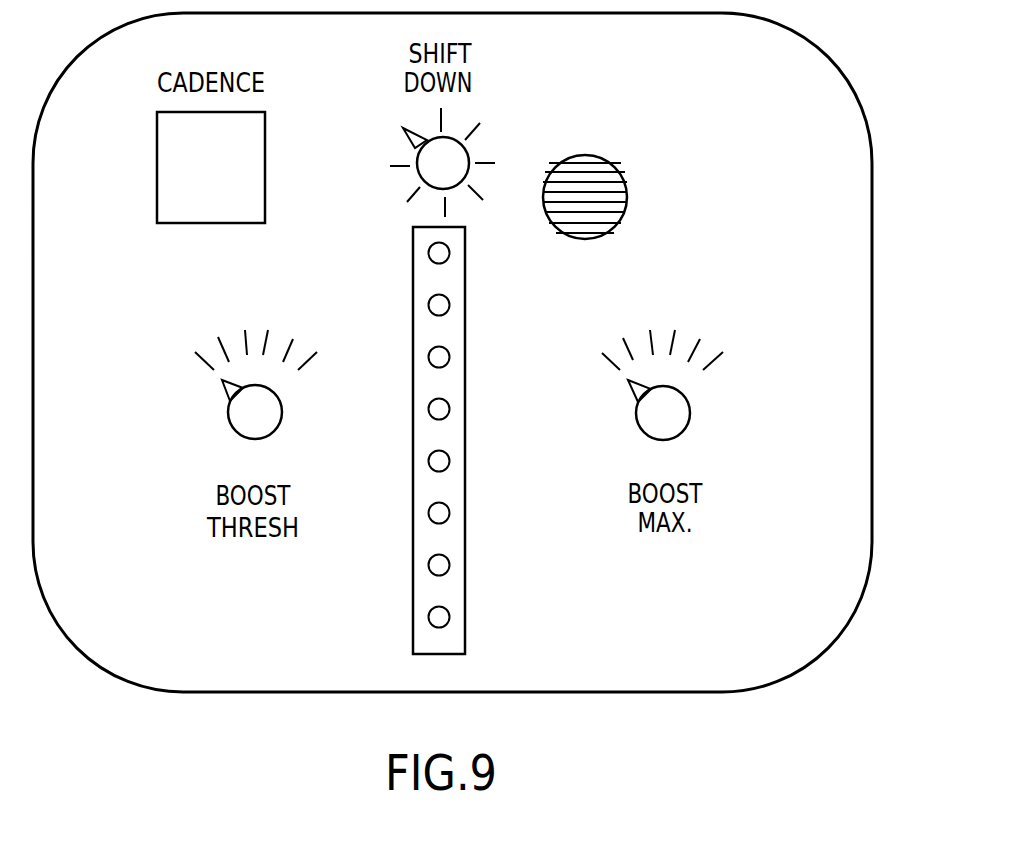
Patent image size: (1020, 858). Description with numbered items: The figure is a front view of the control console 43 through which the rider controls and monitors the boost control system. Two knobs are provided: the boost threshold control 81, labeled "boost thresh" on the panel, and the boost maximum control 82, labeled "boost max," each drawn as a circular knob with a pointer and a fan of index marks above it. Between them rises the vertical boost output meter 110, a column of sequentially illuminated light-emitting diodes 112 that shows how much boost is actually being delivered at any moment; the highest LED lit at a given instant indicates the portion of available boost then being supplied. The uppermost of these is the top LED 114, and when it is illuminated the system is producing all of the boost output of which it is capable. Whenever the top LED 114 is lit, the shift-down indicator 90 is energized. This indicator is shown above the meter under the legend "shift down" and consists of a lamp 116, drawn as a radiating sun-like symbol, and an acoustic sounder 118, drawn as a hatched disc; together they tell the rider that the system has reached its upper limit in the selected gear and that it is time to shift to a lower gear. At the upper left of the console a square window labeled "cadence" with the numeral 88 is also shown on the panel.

The control console 43 is at (828, 58).
The cadence display 88 is at (228, 174).
The shift-down indicator 90 is at (518, 154).
The lamp 116 is at (418, 175).
The acoustic sounder 118 is at (625, 182).
The boost output meter 110 is at (435, 441).
The light-emitting diodes 112 is at (437, 617).
The top LED 114 is at (437, 255).
The boost threshold control 81 is at (233, 424).
The boost maximum control 82 is at (686, 426).